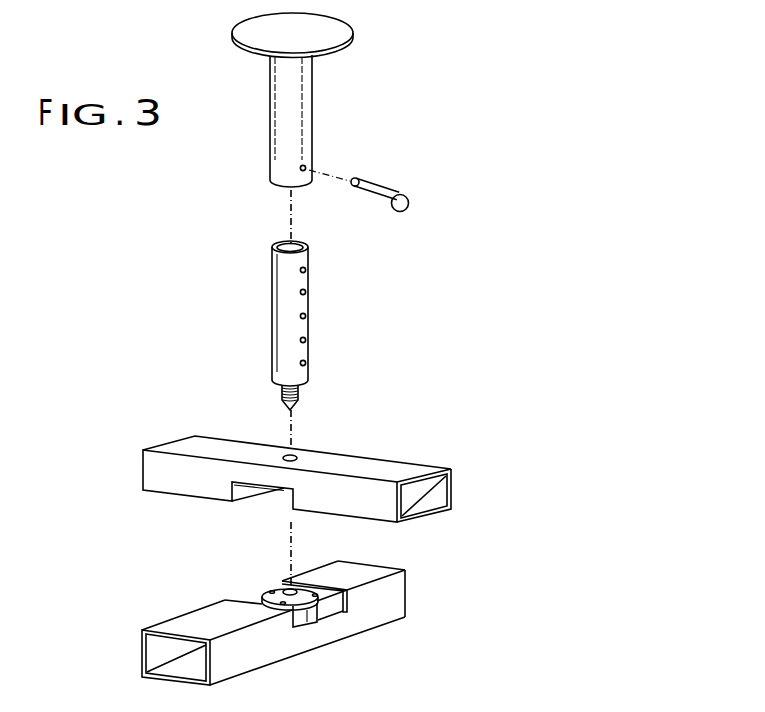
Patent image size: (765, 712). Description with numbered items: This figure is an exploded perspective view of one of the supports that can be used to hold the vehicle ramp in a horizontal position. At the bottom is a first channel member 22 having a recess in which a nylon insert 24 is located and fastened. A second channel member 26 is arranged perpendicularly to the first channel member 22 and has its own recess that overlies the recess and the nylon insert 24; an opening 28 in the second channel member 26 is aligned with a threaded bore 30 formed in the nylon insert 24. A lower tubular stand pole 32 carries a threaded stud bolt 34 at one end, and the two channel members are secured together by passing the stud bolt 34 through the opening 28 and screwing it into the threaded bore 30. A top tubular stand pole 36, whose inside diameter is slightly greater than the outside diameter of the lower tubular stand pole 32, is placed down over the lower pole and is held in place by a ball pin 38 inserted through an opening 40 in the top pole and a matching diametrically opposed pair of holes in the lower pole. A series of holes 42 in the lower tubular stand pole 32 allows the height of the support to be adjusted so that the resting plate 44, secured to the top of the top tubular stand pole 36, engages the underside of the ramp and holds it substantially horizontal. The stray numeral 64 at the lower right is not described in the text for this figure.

The first channel member 22 is at (257, 653).
The nylon insert 24 is at (307, 612).
The second channel member 26 is at (408, 462).
The opening 28 is at (300, 454).
The threaded bore 30 is at (297, 590).
The lower tubular stand pole 32 is at (272, 318).
The threaded stud bolt 34 is at (300, 402).
The top tubular stand pole 36 is at (313, 93).
The ball pin 38 is at (390, 184).
The opening 40 is at (306, 166).
The series of holes 42 is at (306, 270).
The resting plate 44 is at (298, 31).
The reference numeral (adjacent figure) 64 is at (722, 704).